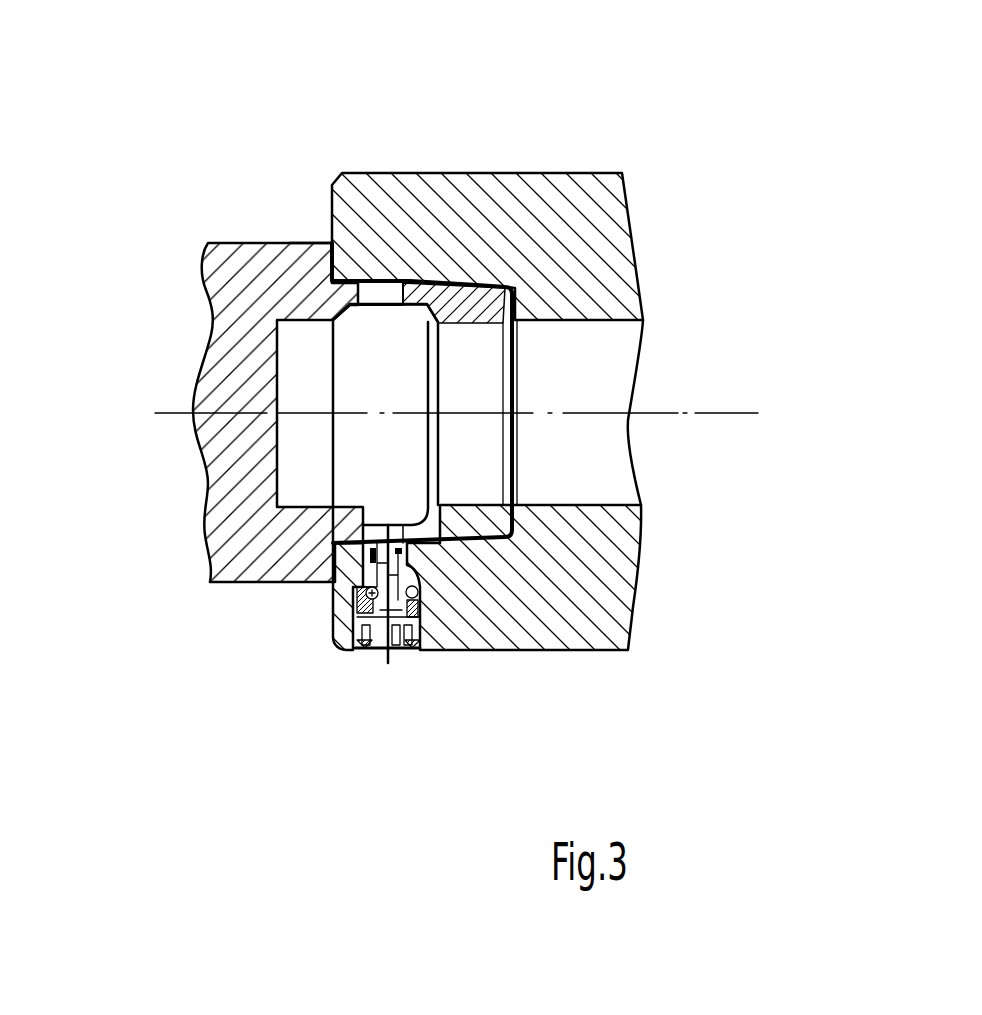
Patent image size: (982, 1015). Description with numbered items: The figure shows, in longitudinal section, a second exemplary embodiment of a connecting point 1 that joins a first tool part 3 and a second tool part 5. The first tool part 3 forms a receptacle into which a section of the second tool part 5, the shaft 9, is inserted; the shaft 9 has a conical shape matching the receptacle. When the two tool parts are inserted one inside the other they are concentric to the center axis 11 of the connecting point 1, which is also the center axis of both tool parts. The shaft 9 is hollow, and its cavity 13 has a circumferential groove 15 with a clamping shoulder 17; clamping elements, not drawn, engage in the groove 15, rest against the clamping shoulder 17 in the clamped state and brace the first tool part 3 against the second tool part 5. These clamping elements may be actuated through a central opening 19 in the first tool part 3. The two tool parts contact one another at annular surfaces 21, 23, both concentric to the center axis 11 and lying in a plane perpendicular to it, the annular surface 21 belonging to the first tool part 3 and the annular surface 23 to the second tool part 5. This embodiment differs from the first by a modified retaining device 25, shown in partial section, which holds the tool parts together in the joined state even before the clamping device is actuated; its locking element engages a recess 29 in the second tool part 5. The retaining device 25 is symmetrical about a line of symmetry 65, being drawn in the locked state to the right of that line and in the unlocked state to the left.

The connecting point 1 is at (270, 130).
The first tool part 3 is at (623, 173).
The second tool part 5 is at (212, 272).
The shaft 9 is at (485, 282).
The center axis 11 is at (713, 413).
The cavity 13 is at (323, 381).
The circumferential groove 15 is at (353, 330).
The clamping shoulder 17 is at (475, 283).
The central opening 19 is at (577, 380).
The annular surface 21 is at (337, 265).
The annular surface 23 is at (306, 243).
The retaining device 25 is at (357, 662).
The recess 29 is at (365, 527).
The line of symmetry 65 is at (403, 568).